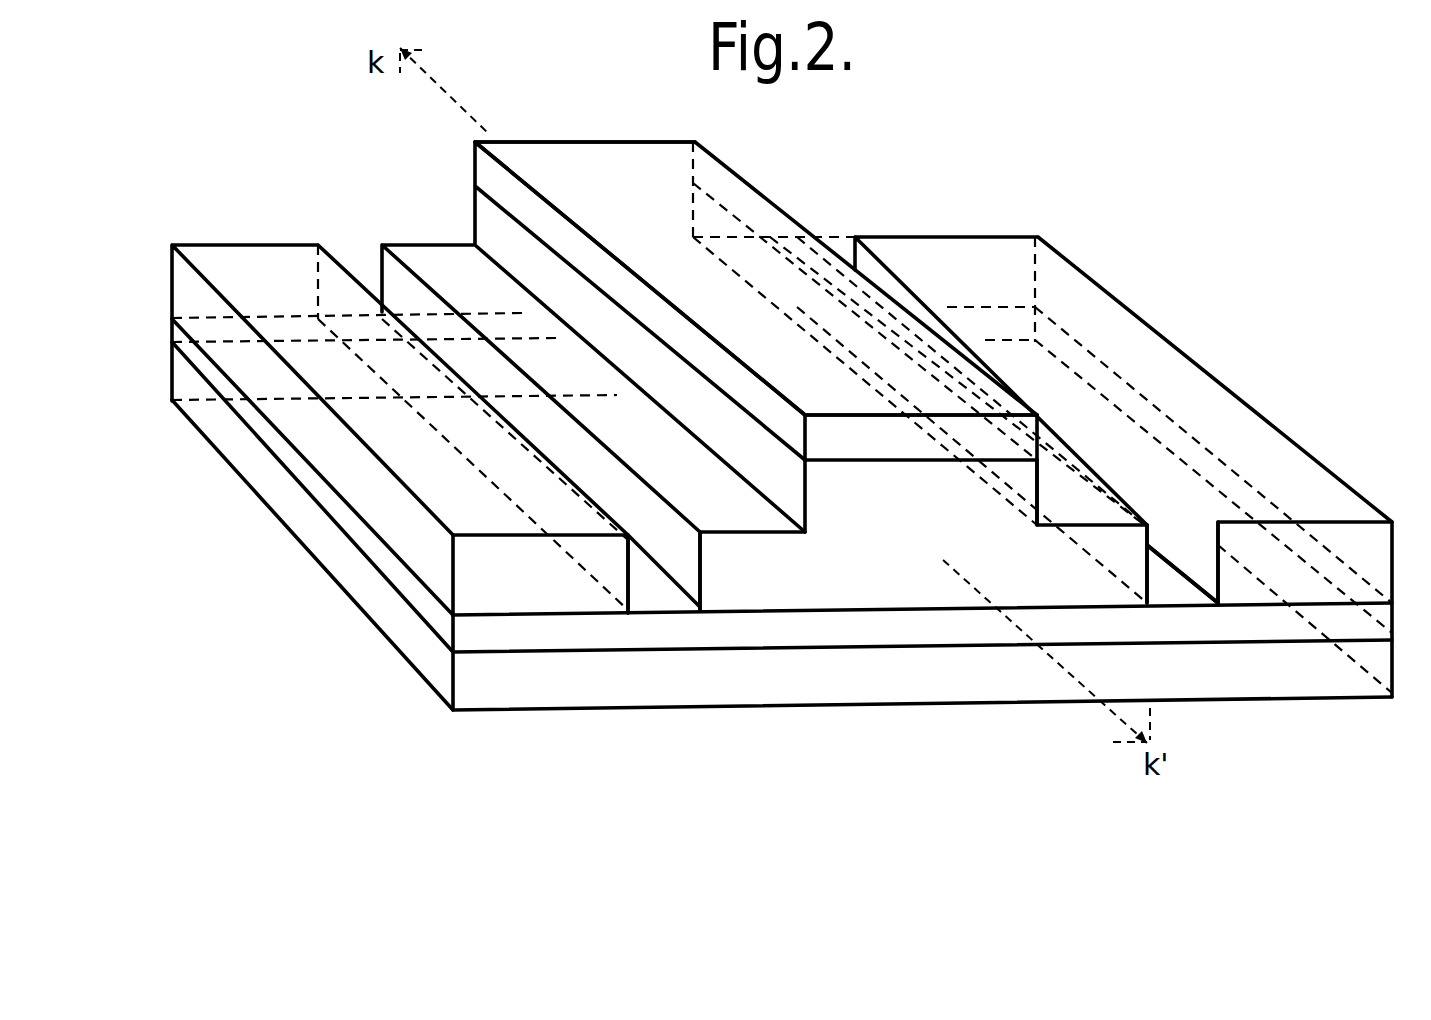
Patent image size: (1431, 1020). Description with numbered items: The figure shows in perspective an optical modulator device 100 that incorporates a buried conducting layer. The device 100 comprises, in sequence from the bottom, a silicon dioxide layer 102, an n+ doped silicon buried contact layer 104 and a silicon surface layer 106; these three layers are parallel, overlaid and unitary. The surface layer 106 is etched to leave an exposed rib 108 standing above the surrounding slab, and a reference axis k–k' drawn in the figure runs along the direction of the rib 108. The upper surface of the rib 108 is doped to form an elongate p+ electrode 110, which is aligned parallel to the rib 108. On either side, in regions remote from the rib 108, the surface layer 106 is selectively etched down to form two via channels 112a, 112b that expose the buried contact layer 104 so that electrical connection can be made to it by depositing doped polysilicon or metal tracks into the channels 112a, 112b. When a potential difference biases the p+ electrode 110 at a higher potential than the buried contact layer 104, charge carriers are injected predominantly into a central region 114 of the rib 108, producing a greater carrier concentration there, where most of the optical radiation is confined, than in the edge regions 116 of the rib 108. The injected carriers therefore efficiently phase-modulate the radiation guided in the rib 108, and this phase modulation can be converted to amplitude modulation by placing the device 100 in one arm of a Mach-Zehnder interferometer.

The optical device 100 is at (1178, 322).
The silicon dioxide layer 102 is at (584, 690).
The n+ doped silicon buried contact layer 104 is at (467, 635).
The silicon surface layer 106 is at (477, 590).
The rib 108 is at (498, 242).
The p+ electrode 110 is at (890, 427).
The via channel 112a is at (660, 595).
The via channel 112b is at (1170, 577).
The central region 114 is at (923, 493).
The edge regions 116 is at (828, 550).